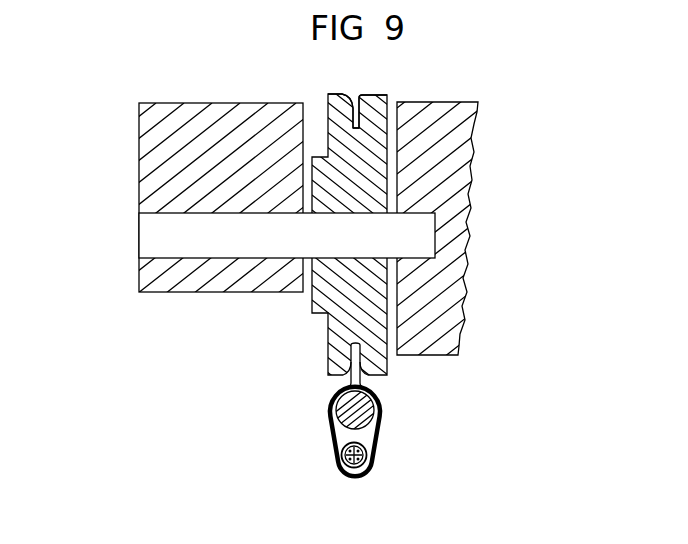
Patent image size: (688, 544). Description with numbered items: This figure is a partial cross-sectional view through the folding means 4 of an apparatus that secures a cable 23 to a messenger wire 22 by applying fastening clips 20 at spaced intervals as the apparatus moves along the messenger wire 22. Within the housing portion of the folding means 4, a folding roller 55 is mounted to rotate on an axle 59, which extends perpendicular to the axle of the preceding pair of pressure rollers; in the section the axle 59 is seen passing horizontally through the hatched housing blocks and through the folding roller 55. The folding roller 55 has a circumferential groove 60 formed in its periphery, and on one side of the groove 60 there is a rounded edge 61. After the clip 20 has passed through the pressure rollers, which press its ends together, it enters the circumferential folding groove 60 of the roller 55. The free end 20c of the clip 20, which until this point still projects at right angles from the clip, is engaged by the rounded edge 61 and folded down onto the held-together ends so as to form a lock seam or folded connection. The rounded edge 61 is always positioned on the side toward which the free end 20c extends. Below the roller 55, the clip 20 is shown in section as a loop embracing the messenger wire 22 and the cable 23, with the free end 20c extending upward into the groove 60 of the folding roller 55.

The folding means 4 is at (124, 152).
The axle 59 is at (150, 237).
The folding roller 55 is at (388, 96).
The circumferential groove 60 is at (356, 100).
The rounded edge 61 is at (351, 100).
The free end 20c is at (350, 379).
The clip 20 is at (380, 437).
The messenger wire 22 is at (367, 403).
The cable 23 is at (367, 470).